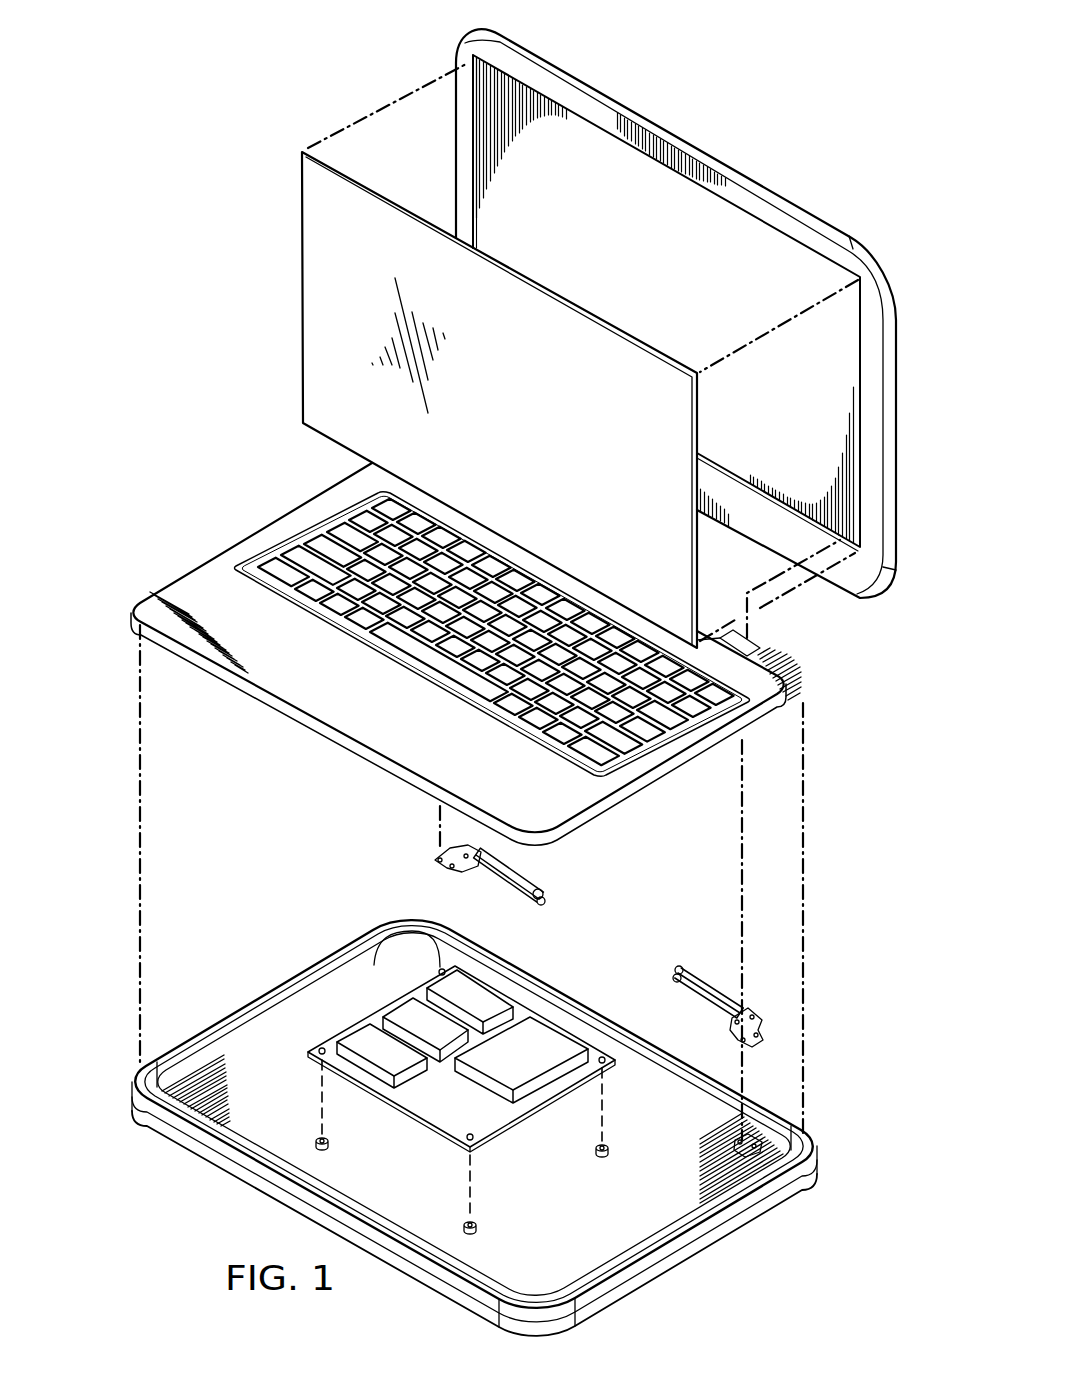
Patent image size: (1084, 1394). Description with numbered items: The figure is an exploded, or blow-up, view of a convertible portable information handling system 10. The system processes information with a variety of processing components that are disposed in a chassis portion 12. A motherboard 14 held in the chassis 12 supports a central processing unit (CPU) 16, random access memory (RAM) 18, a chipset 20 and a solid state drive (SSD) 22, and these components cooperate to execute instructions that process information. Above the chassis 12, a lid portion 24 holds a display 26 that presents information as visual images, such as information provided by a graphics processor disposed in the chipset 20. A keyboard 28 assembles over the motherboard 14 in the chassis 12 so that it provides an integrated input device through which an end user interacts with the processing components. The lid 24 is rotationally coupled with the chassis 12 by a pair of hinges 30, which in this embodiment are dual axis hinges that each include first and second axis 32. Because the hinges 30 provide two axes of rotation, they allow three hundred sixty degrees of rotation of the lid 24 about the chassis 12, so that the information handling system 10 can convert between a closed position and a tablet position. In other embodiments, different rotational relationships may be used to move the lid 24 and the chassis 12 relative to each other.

The convertible portable information handling system 10 is at (165, 196).
The chassis portion 12 is at (235, 998).
The motherboard 14 is at (543, 1131).
The central processing unit (CPU) 16 is at (388, 1052).
The random access memory (RAM) 18 is at (405, 1013).
The chipset 20 is at (447, 983).
The solid state drive (SSD) 22 is at (488, 1067).
The lid portion 24 is at (688, 136).
The display 26 is at (543, 459).
The keyboard 28 is at (293, 537).
The hinges 30 is at (650, 980).
The first and second axis 32 is at (773, 1056).